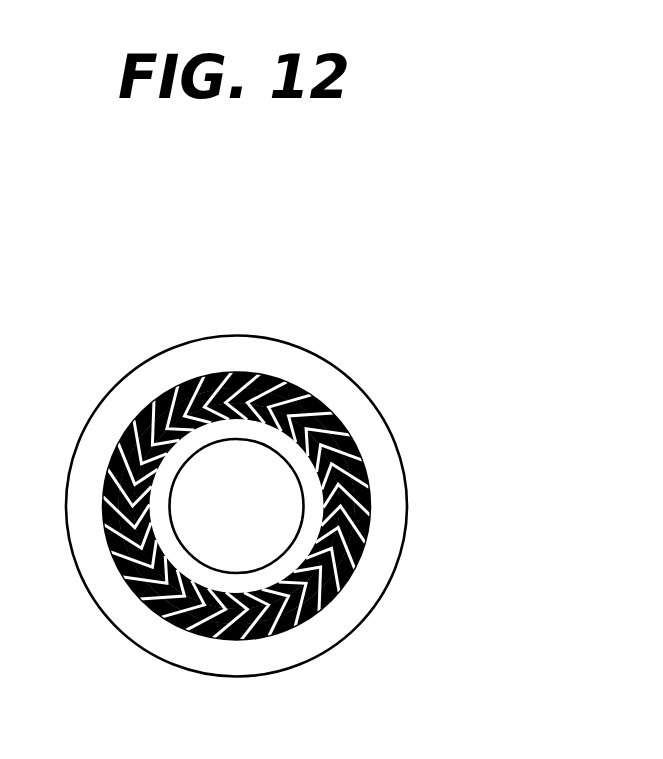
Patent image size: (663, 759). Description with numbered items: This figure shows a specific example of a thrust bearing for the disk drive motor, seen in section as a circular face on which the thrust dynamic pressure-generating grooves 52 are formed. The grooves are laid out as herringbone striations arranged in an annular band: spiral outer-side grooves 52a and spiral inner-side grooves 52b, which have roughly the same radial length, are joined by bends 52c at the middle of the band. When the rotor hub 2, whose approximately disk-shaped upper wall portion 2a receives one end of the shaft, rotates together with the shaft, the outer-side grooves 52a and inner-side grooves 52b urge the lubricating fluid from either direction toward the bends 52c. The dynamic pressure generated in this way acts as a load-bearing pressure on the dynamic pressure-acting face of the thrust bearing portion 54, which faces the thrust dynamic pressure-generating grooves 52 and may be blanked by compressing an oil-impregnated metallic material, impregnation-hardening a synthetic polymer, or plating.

The rotor hub 2 is at (389, 424).
The upper wall portion 2a is at (382, 545).
The thrust dynamic pressure-generating grooves 52 is at (432, 230).
The spiral outer-side grooves 52a is at (260, 377).
The spiral inner-side grooves 52b is at (243, 377).
The bends 52c is at (213, 376).
The thrust bearing portion 54 is at (152, 398).